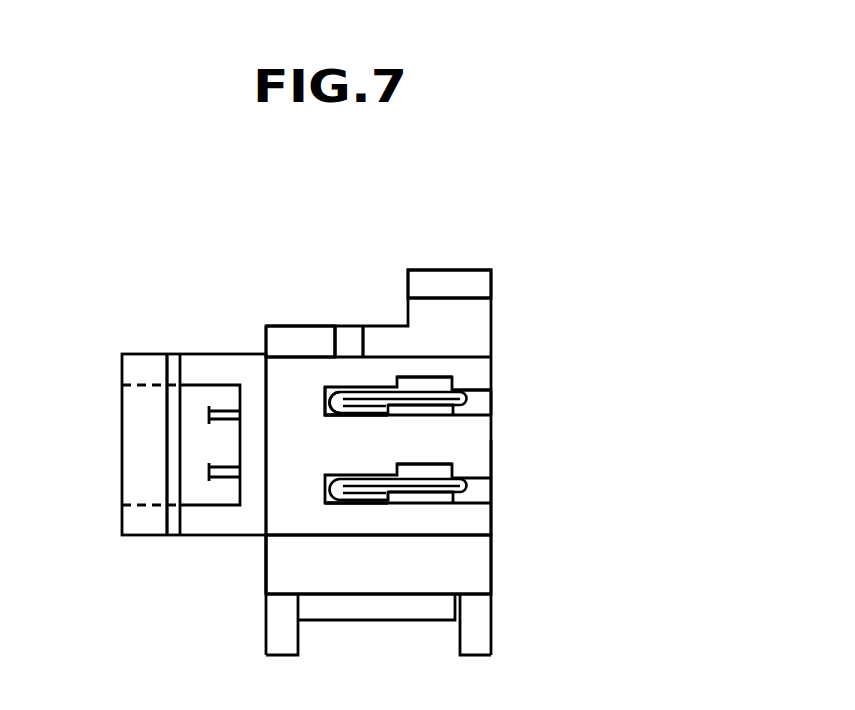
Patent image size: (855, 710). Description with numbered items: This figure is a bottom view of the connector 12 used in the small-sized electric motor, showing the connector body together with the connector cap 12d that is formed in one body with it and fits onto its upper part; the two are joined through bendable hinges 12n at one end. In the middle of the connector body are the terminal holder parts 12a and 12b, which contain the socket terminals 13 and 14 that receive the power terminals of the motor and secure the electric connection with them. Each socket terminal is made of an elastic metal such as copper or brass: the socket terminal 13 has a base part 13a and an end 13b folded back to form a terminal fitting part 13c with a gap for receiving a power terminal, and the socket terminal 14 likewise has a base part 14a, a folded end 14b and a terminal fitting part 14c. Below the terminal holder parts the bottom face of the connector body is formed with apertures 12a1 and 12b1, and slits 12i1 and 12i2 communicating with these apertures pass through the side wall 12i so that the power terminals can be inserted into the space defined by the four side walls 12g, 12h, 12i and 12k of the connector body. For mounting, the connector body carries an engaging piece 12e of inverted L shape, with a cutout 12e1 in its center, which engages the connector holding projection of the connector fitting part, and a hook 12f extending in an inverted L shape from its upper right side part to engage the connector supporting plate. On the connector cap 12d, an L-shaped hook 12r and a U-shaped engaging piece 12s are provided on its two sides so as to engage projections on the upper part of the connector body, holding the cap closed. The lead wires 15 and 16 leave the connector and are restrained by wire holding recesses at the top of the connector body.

The connector 12 is at (392, 314).
The terminal holder part 12a is at (446, 496).
The aperture 12a1 is at (431, 464).
The terminal holder part 12b is at (446, 410).
The aperture 12b1 is at (430, 378).
The connector cap 12d is at (267, 578).
The engaging piece 12e is at (122, 513).
The cutout 12e1 is at (167, 386).
The hook 12f is at (468, 289).
The side wall 12g is at (343, 421).
The side wall 12h is at (452, 537).
The side wall 12i is at (493, 460).
The slit 12i1 is at (497, 505).
The slit 12i2 is at (494, 402).
The side wall 12k is at (367, 355).
The hinge 12n is at (281, 657).
The L-shaped hook 12r is at (284, 340).
The U-shaped engaging piece 12s is at (373, 622).
The socket terminal 13 is at (421, 488).
The base part 13a is at (397, 494).
The end 13b is at (348, 496).
The terminal fitting part 13c is at (325, 493).
The socket terminal 14 is at (414, 390).
The base part 14a is at (391, 388).
The end 14b is at (331, 393).
The terminal fitting part 14c is at (325, 388).
The lead wire 15 is at (217, 468).
The lead wire 16 is at (217, 410).